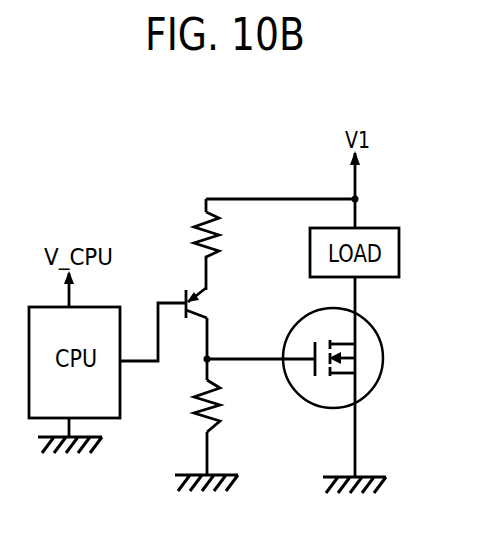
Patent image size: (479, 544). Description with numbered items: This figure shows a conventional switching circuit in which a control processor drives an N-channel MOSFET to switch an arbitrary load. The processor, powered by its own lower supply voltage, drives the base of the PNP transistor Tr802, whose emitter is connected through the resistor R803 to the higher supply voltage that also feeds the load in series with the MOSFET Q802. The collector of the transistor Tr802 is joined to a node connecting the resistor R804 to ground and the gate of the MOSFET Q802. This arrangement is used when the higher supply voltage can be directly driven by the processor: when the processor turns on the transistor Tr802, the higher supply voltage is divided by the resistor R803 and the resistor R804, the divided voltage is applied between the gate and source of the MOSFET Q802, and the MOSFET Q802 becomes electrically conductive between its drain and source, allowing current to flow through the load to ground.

The resistor R803 is at (174, 251).
The resistor R804 is at (177, 406).
The PNP transistor Tr802 is at (232, 295).
The Nch MOSFET Q802 is at (364, 358).